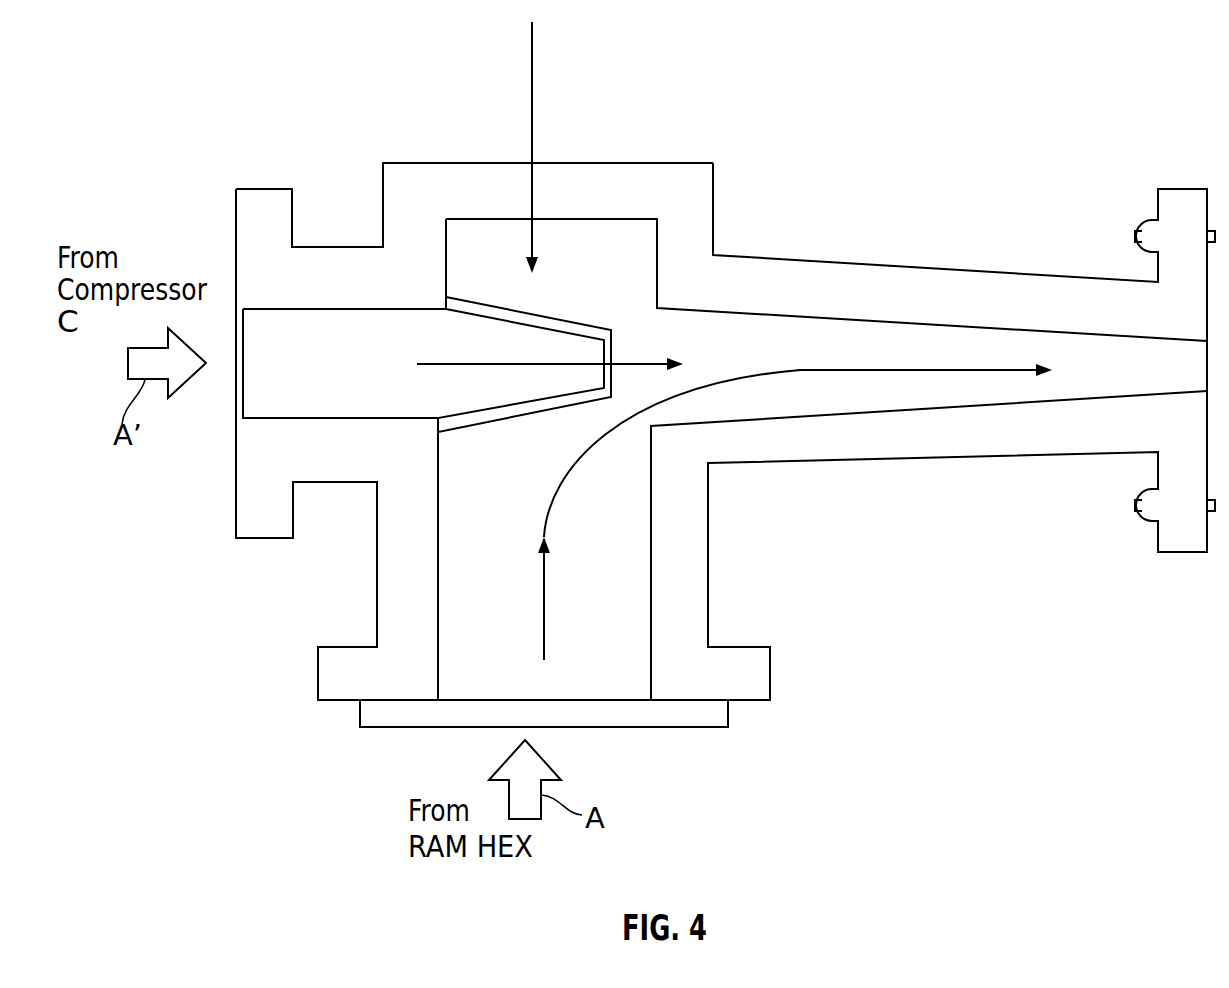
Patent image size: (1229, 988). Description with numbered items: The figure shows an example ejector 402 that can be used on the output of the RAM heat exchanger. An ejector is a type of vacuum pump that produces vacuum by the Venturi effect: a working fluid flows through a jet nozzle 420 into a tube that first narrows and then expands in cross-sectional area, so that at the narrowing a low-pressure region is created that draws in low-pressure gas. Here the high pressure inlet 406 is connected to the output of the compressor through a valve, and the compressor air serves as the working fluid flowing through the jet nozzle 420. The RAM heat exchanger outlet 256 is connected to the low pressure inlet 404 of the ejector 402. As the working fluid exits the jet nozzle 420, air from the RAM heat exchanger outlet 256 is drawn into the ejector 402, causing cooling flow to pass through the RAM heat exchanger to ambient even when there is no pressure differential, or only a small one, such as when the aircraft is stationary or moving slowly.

The ejector 402 is at (713, 255).
The low pressure inlet 404 is at (771, 672).
The high pressure inlet 406 is at (240, 188).
The jet nozzle 420 is at (497, 415).
The RAM heat exchanger outlet 256 is at (730, 712).